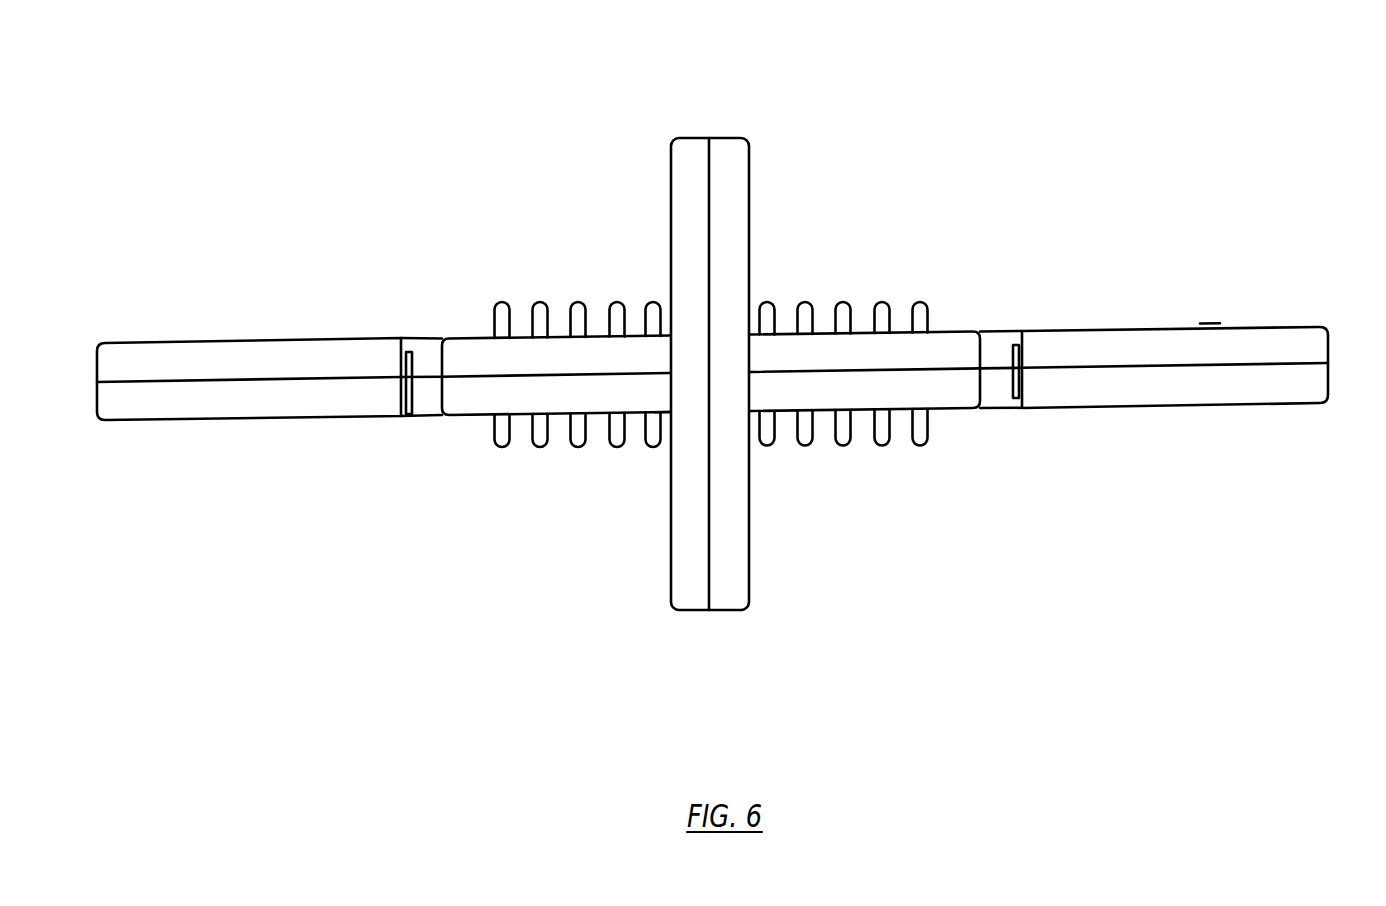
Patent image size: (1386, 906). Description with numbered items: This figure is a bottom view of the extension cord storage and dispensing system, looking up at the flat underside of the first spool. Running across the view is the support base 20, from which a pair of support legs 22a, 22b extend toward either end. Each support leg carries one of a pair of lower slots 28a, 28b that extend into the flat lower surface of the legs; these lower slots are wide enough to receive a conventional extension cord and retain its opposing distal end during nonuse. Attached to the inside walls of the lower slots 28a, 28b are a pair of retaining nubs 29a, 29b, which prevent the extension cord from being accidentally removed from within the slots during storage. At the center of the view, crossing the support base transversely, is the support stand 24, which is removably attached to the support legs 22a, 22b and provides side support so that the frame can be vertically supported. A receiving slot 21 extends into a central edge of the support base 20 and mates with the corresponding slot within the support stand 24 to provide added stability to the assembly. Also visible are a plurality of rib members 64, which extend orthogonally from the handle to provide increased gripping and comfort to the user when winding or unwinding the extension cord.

The support base 20 is at (1210, 324).
The receiving slot 21 is at (670, 413).
The support leg 22a is at (167, 348).
The support leg 22b is at (1235, 398).
The support stand 24 is at (732, 193).
The lower slot 28a is at (442, 348).
The lower slot 28b is at (990, 335).
The retaining nub 29a is at (410, 415).
The retaining nub 29b is at (1010, 403).
The rib members 64 is at (845, 307).